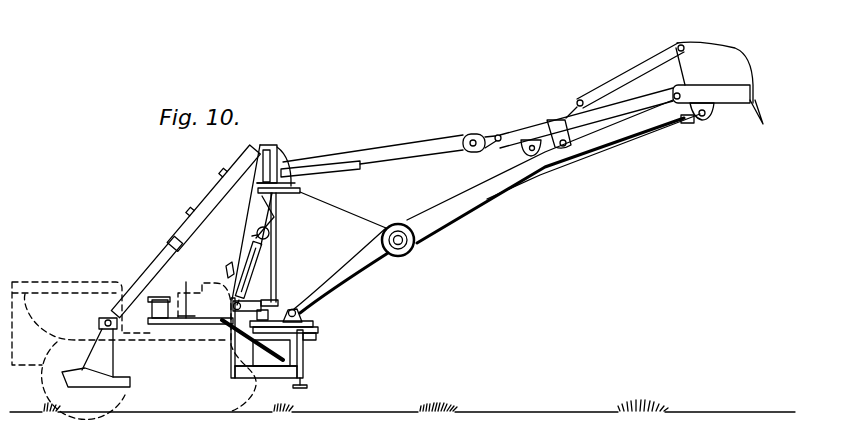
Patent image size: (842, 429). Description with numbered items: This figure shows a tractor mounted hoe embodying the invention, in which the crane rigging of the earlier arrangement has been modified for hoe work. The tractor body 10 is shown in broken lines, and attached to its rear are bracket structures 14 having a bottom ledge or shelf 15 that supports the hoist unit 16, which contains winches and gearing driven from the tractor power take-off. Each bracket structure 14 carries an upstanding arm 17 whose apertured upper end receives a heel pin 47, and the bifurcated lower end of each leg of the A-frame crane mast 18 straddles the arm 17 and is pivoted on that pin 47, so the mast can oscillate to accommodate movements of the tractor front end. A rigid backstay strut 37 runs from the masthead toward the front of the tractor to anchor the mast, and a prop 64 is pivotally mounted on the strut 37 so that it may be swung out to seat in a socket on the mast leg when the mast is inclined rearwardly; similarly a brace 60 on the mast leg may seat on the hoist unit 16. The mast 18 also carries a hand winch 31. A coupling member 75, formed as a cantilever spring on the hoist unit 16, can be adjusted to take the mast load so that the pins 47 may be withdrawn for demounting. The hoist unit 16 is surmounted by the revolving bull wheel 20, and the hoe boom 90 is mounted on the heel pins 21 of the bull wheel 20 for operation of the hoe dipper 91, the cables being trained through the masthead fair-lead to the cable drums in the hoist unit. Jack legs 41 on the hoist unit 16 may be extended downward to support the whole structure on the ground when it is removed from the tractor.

The body 10 is at (100, 283).
The bracket structure 14 is at (225, 368).
The bottom ledge or shelf 15 is at (252, 378).
The hoist unit 16 is at (310, 350).
The upstanding arm 17 is at (233, 327).
The A-frame crane mast 18 is at (247, 227).
The revolving bull wheel 20 is at (310, 328).
The heel pin 21 is at (302, 312).
The hand winch 31 is at (272, 231).
The backstay strut 37 is at (227, 191).
The jack leg 41 is at (310, 385).
The heel pin 47 is at (232, 301).
The brace 60 is at (258, 276).
The prop 64 is at (180, 248).
The coupling member 75 is at (265, 303).
The hoe boom 90 is at (490, 199).
The hoe dipper 91 is at (749, 108).